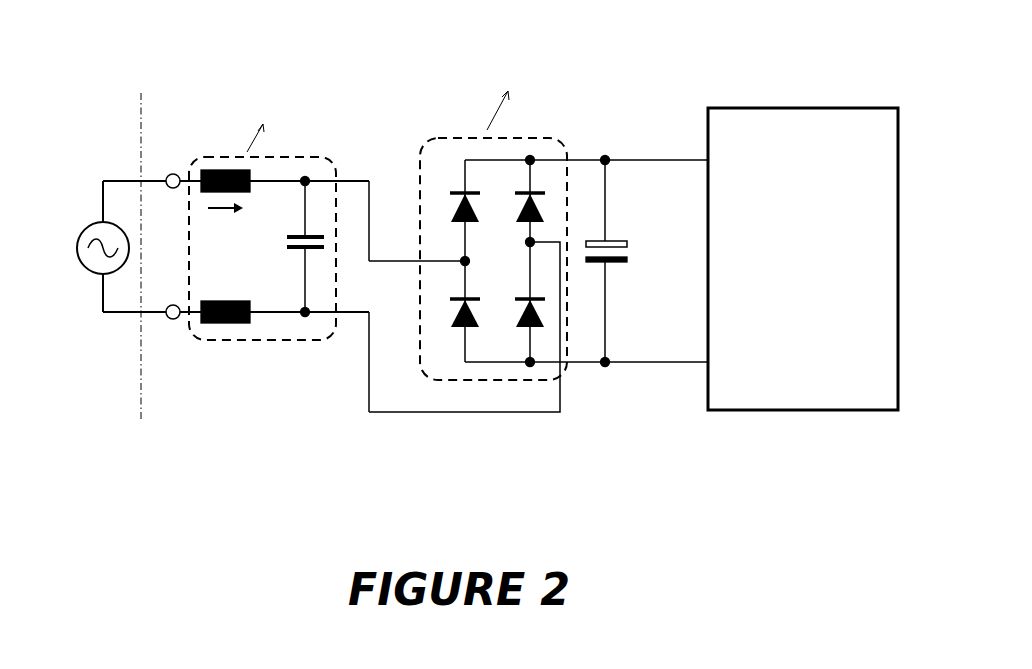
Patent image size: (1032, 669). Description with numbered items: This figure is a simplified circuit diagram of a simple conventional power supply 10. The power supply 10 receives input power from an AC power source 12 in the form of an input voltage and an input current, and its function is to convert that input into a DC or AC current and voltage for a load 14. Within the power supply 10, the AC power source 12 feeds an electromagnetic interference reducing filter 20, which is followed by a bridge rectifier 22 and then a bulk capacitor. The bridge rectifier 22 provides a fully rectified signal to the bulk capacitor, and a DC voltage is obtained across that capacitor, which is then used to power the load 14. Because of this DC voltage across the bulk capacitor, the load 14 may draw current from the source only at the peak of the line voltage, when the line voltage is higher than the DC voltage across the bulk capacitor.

The power supply 10 is at (660, 72).
The AC power source 12 is at (82, 229).
The load 14 is at (803, 259).
The EMI reducing filter 20 is at (313, 157).
The bridge rectifier 22 is at (555, 140).